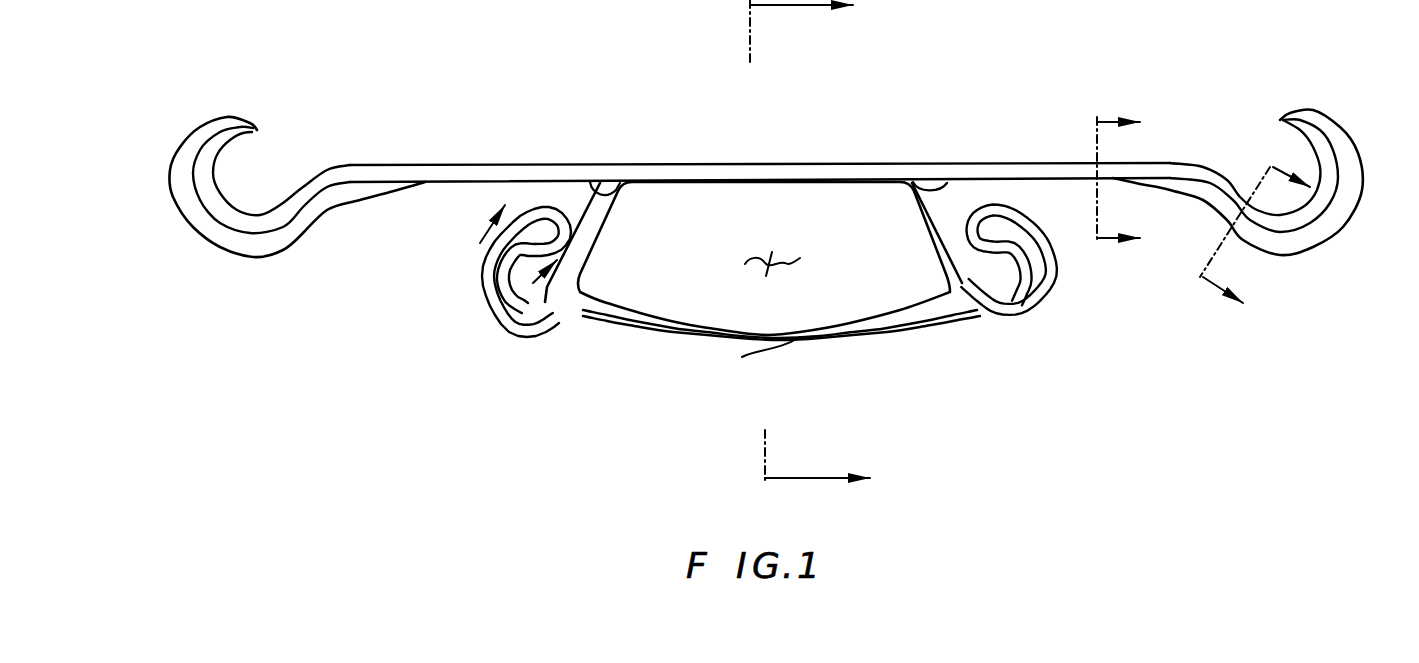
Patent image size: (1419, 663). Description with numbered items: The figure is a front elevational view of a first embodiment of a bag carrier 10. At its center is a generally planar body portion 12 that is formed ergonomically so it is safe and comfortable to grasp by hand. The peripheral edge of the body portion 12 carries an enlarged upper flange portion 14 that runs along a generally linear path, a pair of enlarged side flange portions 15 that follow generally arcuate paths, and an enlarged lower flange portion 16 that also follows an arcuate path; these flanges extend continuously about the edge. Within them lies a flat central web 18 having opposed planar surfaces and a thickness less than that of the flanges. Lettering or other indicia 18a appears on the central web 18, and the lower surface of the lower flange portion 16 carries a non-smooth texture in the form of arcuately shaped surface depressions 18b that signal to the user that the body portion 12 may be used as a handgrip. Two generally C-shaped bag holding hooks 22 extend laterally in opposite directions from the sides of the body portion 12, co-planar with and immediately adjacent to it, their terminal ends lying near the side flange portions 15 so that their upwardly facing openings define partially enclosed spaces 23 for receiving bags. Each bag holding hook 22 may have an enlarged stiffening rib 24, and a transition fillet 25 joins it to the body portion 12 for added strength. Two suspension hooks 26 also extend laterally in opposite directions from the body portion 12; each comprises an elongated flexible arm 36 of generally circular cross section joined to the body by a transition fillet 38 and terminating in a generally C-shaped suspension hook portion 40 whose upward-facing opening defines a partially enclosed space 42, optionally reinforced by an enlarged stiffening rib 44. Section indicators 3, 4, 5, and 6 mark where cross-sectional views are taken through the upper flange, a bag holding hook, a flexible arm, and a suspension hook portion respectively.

The bag carrier 10 is at (388, 378).
The body portion 12 is at (655, 372).
The upper flange portion 14 is at (890, 172).
The side flange portions 15 is at (583, 222).
The lower flange portion 16 is at (852, 342).
The central web 18 is at (920, 271).
The indicia 18a is at (800, 217).
The arcuately shaped surface depressions 18b is at (740, 332).
The bag holding hooks 22 is at (480, 283).
The partially enclosed spaces 23 is at (518, 300).
The stiffening rib 24 is at (549, 320).
The transition fillet 25 is at (582, 312).
The suspension hooks 26 is at (232, 305).
The elongated flexible arm 36 is at (500, 177).
The transition fillet 38 is at (603, 182).
The suspension hook portion 40 is at (187, 165).
The partially enclosed spaces 42 is at (247, 180).
The stiffening rib 44 is at (255, 129).
The section line 3- 3 is at (810, 241).
The section line 4- 4 is at (518, 244).
The section line 5- 5 is at (1118, 180).
The section line 6- 6 is at (1255, 235).